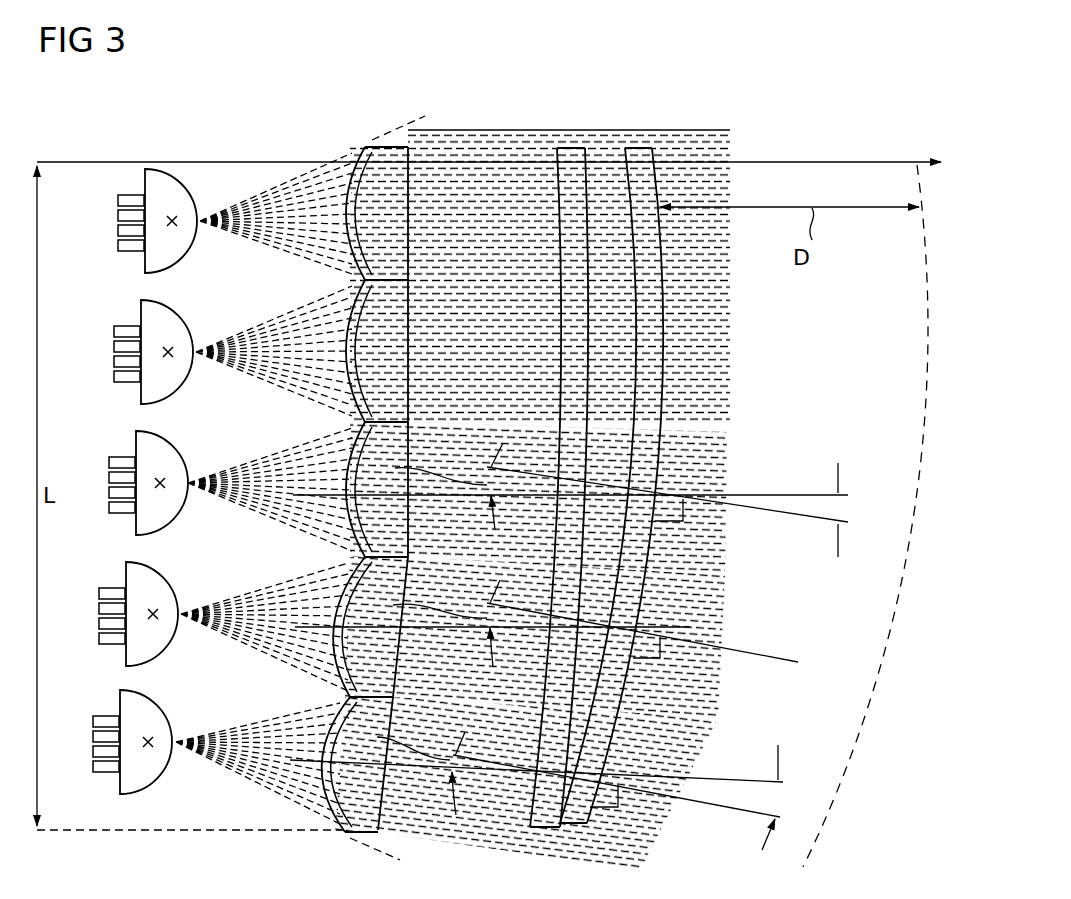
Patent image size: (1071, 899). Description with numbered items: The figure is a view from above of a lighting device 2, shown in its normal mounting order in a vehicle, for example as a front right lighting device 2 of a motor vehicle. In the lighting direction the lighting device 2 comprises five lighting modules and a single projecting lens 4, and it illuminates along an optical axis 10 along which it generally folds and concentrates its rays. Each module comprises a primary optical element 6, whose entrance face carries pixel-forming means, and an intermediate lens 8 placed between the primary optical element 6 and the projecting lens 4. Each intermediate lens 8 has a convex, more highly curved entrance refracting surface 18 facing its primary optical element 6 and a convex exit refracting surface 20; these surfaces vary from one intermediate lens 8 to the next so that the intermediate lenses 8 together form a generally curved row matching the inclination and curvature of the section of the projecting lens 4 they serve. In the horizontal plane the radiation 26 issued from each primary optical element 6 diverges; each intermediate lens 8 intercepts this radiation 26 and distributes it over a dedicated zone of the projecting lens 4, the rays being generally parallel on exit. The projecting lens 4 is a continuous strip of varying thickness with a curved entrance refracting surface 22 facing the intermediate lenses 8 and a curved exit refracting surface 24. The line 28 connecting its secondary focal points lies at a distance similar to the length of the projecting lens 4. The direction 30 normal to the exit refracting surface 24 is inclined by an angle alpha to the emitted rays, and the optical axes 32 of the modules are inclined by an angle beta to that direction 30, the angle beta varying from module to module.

The lighting device 2 is at (740, 95).
The projecting lens 4 is at (614, 132).
The primary optical element 6 is at (121, 267).
The intermediate lens 8 is at (368, 146).
The optical axis 10 is at (830, 160).
The entrance refracting surface 18 is at (352, 462).
The exit refracting surface 20 is at (410, 343).
The entrance refracting surface 22 is at (570, 322).
The exit refracting surface 24 is at (657, 362).
The radiation 26 is at (260, 197).
The line connecting the secondary focal points 28 is at (838, 812).
The direction normal to the exit refracting surface 30 is at (787, 525).
The optical axes of the modules 32 is at (522, 500).